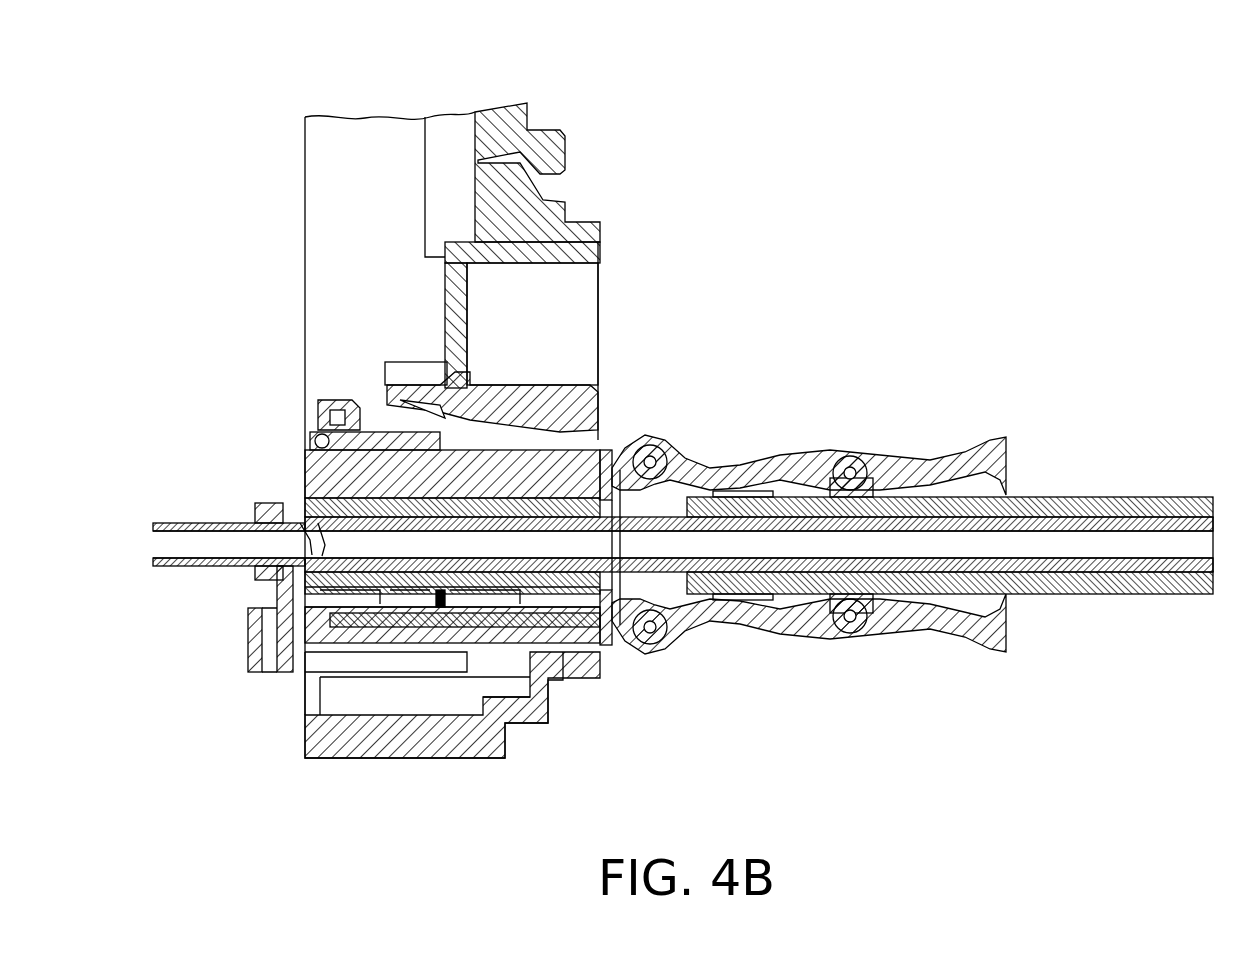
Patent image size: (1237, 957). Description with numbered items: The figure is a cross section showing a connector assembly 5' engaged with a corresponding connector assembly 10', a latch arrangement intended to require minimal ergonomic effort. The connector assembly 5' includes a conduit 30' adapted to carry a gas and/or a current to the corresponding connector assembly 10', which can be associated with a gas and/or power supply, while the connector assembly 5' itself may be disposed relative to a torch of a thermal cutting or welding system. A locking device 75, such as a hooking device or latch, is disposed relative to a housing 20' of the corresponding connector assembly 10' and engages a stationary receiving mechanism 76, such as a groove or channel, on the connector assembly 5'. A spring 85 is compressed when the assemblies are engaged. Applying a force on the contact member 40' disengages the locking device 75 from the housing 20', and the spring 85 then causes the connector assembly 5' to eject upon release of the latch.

The corresponding connector assembly 10' is at (424, 401).
The contact member 40' is at (576, 324).
The housing 20' is at (535, 394).
The connector assembly 5' is at (809, 516).
The locking device 75 is at (316, 410).
The stationary receiving mechanism 76 is at (308, 453).
The spring 85 is at (298, 550).
The conduit 30' is at (946, 596).